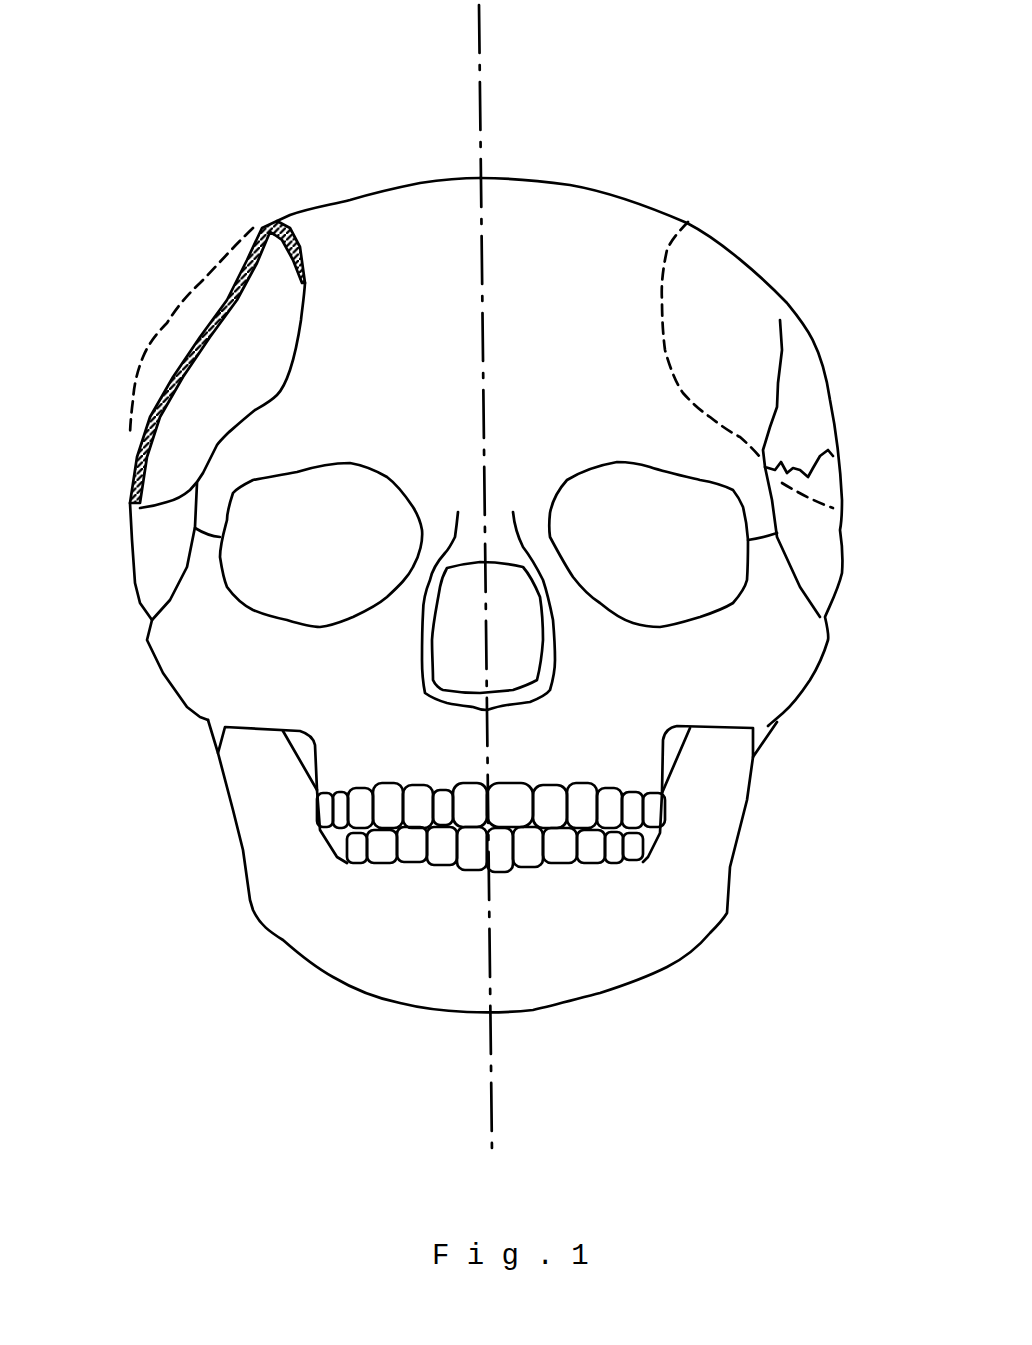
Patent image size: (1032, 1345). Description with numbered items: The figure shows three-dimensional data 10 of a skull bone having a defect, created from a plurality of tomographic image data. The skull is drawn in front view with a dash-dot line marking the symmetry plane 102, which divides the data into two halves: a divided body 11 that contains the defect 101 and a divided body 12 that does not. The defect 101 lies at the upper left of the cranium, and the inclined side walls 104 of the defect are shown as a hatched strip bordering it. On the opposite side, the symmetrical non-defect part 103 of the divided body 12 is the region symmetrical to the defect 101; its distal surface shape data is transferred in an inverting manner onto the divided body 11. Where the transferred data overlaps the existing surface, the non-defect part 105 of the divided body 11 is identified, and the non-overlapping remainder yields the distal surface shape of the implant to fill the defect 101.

The three-dimensional data of a bone 10 is at (803, 100).
The divided body 11 is at (418, 212).
The divided body 12 is at (573, 207).
The defect 101 is at (193, 317).
The symmetry plane 102 is at (487, 1107).
The symmetrical non-defect part 103 is at (738, 303).
The side walls of the defect 104 is at (127, 476).
The non-defect part 105 is at (343, 223).